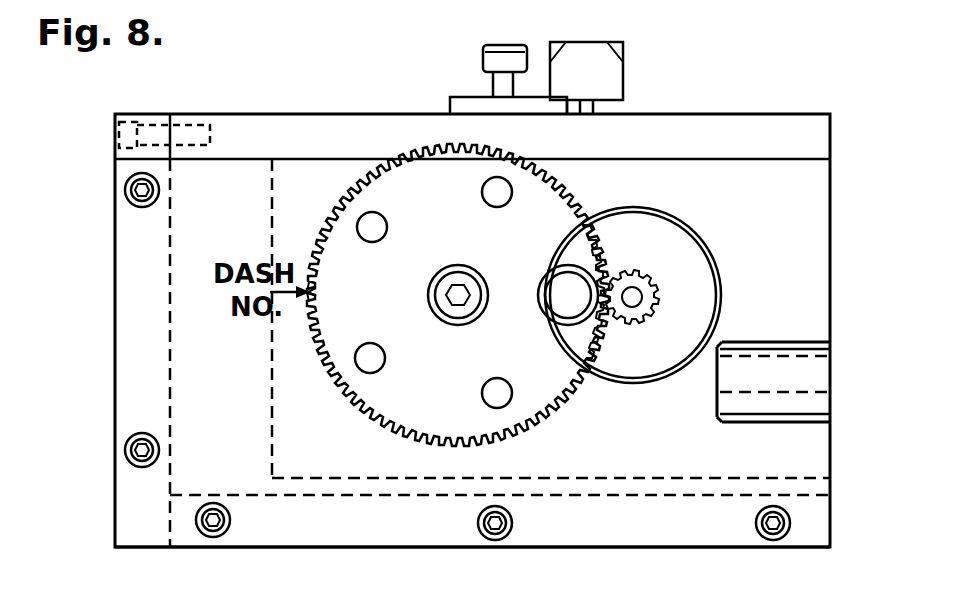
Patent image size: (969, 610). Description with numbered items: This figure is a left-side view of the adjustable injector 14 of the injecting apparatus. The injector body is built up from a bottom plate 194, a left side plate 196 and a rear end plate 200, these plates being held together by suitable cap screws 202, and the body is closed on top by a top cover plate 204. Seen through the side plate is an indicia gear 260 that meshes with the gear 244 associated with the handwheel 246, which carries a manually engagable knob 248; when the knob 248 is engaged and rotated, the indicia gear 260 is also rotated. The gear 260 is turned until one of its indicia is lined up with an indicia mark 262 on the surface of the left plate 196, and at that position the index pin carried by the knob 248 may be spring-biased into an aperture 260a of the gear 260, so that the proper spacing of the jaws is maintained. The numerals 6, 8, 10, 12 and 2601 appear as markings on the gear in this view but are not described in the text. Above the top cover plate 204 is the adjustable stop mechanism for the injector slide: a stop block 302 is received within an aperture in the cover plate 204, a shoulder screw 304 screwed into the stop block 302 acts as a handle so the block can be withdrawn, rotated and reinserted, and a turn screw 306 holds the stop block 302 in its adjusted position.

The bottom plate 194 is at (555, 518).
The left side plate 196 is at (820, 213).
The rear end plate 200 is at (135, 313).
The cap screws 202 is at (124, 450).
The top cover plate 204 is at (283, 122).
The gear 244 is at (652, 292).
The handwheel 246 is at (675, 237).
The manually engagable knob 248 is at (539, 296).
The indicia gear 260 is at (450, 144).
The aperture of the gear 260a is at (387, 227).
The gear tooth 2601 is at (343, 298).
The indicia mark 262 is at (283, 298).
The stop block 302 is at (464, 106).
The shoulder screw 304 is at (486, 58).
The turn screw 306 is at (623, 76).
The dash number 6 position 6 is at (425, 188).
The dash number 8 position 8 is at (559, 214).
The dash number 10 position 10 is at (562, 378).
The dash number 12 position 12 is at (411, 415).
The adjustable injector 14 is at (326, 292).